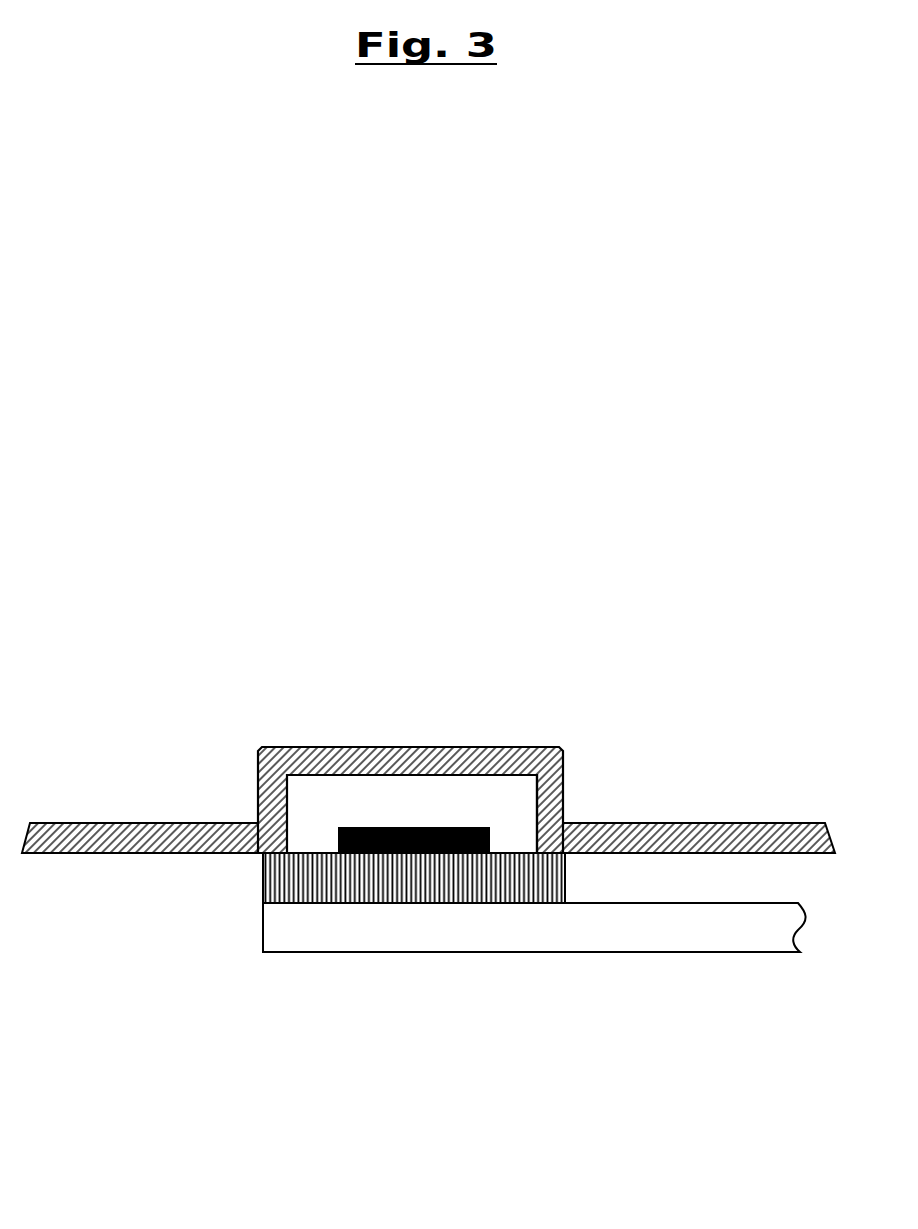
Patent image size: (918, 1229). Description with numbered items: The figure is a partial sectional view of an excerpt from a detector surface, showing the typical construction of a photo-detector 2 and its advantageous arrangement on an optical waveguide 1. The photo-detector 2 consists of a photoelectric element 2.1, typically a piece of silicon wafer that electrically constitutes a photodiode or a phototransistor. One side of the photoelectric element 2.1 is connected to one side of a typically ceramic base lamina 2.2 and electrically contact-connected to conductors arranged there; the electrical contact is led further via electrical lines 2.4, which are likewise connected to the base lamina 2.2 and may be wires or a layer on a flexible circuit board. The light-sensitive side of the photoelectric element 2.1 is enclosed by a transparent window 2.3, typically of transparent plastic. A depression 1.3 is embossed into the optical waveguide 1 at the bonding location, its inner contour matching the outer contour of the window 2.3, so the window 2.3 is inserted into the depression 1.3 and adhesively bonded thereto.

The optical waveguide 1 is at (717, 823).
The depression 1.3 is at (278, 762).
The photo-detector 2 is at (222, 918).
The photoelectric element 2.1 is at (442, 826).
The base lamina 2.2 is at (337, 887).
The window 2.3 is at (370, 793).
The electrical lines 2.4 is at (528, 928).